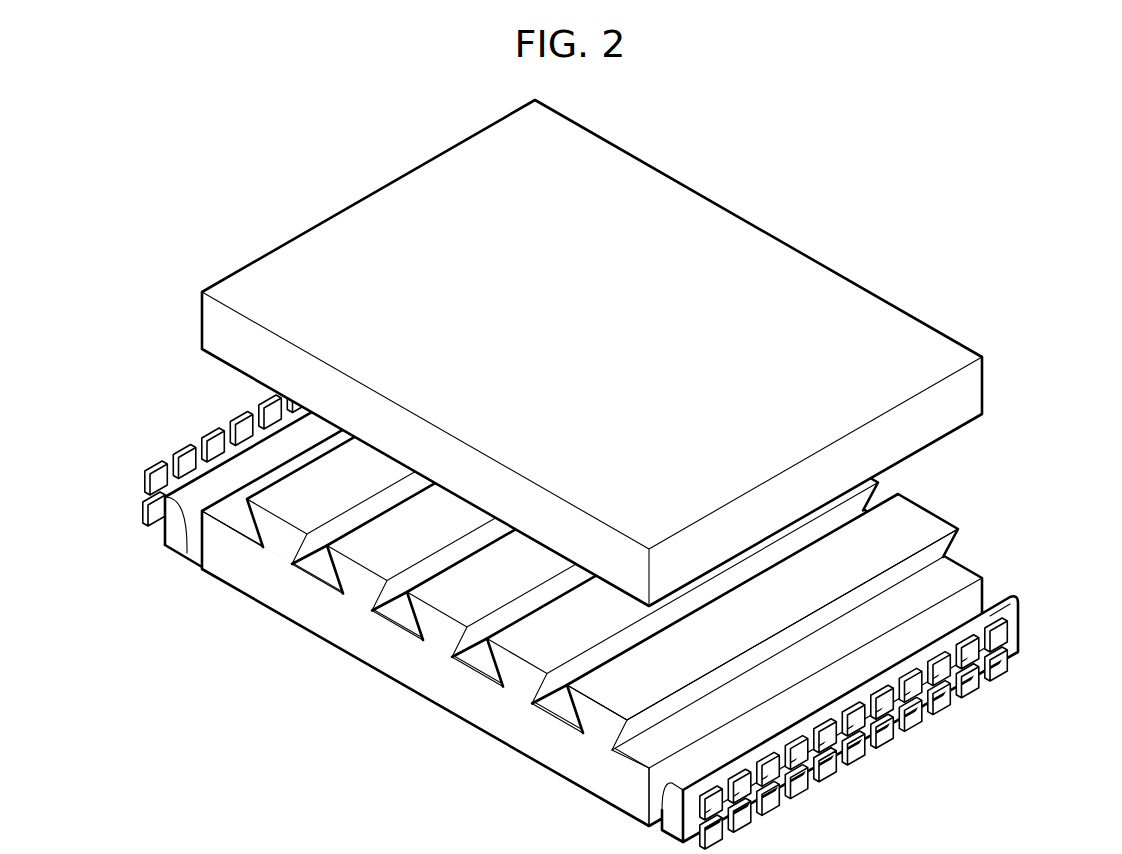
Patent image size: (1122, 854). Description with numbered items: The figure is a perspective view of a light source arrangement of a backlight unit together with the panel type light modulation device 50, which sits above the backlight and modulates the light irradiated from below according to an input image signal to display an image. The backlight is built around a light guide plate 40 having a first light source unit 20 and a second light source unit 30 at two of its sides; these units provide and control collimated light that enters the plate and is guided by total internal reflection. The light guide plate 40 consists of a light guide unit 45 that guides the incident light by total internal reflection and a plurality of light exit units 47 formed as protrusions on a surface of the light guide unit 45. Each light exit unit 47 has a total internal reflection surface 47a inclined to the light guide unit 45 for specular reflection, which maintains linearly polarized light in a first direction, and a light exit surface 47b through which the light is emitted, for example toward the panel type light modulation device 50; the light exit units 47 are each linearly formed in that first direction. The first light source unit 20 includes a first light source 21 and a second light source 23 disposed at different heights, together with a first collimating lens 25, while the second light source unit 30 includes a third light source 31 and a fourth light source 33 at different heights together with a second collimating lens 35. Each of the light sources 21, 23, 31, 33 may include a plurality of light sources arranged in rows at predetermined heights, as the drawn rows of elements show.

The first light source unit 20 is at (309, 444).
The first light source 21 is at (150, 519).
The second light source 23 is at (204, 444).
The first collimating lens 25 is at (186, 554).
The second light source unit 30 is at (882, 722).
The third light source 31 is at (1003, 680).
The fourth light source 33 is at (881, 719).
The second collimating lens 35 is at (1014, 615).
The light guide plate 40 is at (597, 575).
The light guide unit 45 is at (445, 690).
The light exit unit 47 is at (752, 647).
The total internal reflection surface 47a is at (640, 722).
The light exit surface 47b is at (625, 695).
The panel type light modulation device 50 is at (190, 314).